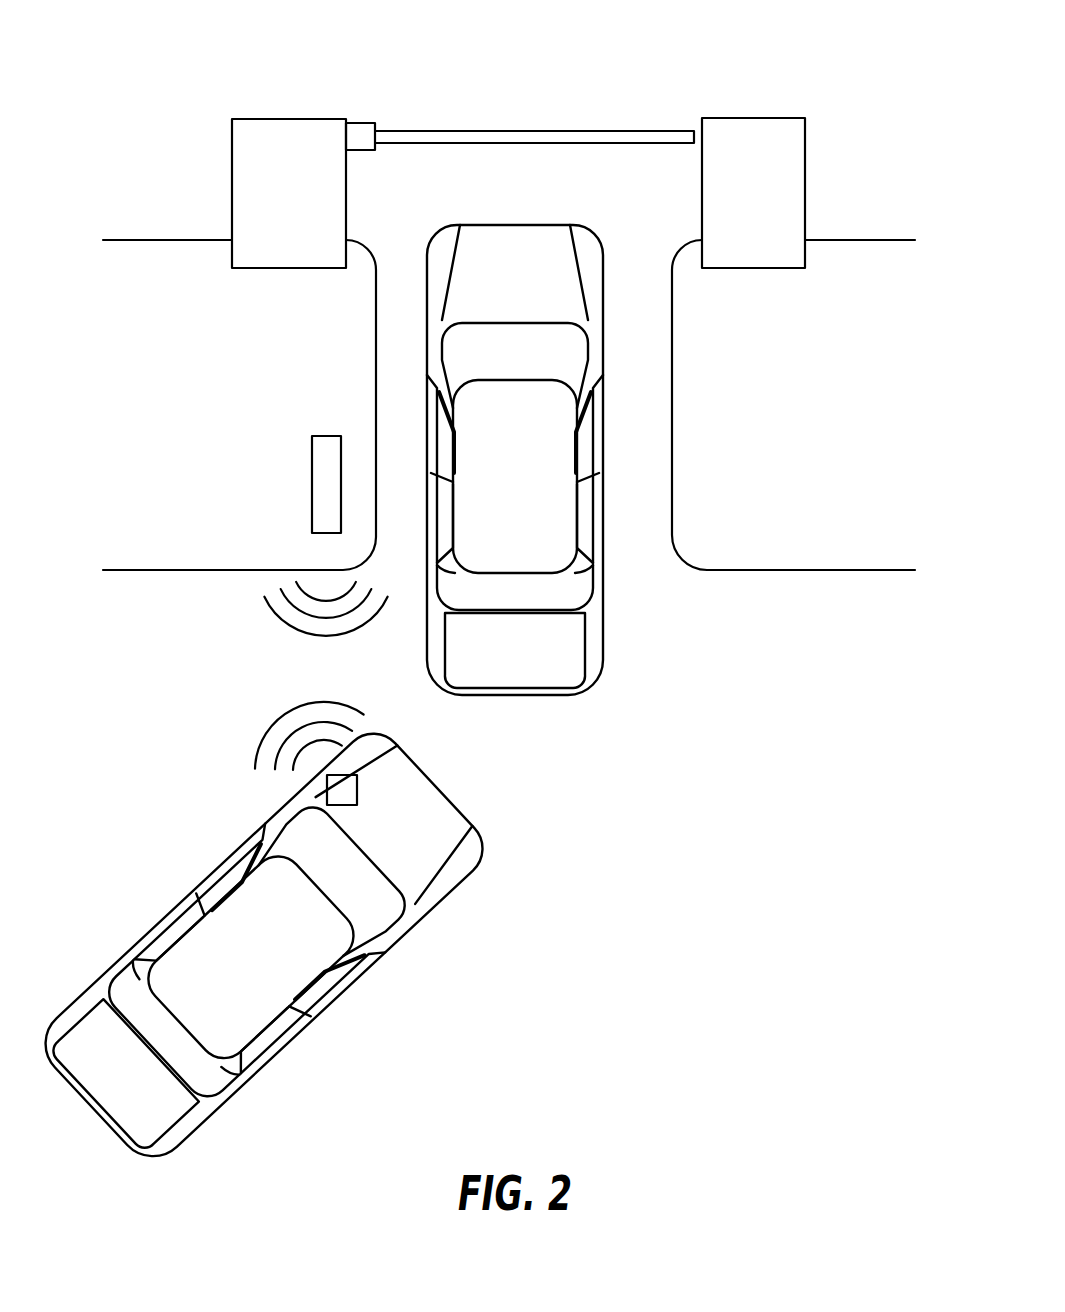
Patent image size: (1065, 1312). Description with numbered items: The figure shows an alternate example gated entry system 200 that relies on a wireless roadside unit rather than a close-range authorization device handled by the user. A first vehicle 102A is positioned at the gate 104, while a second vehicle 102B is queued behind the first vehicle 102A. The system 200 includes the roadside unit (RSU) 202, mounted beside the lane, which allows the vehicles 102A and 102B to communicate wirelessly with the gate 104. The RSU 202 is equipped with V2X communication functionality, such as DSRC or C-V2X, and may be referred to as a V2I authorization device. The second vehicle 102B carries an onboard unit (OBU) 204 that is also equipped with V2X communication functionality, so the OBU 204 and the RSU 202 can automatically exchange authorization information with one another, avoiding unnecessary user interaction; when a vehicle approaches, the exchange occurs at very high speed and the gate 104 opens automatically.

The gated entry system 200 is at (166, 35).
The gate 104 is at (273, 217).
The roadside unit (RSU) 202 is at (312, 480).
The first vehicle 102A is at (538, 504).
The second vehicle 102B is at (232, 975).
The onboard unit (OBU) 204 is at (357, 793).